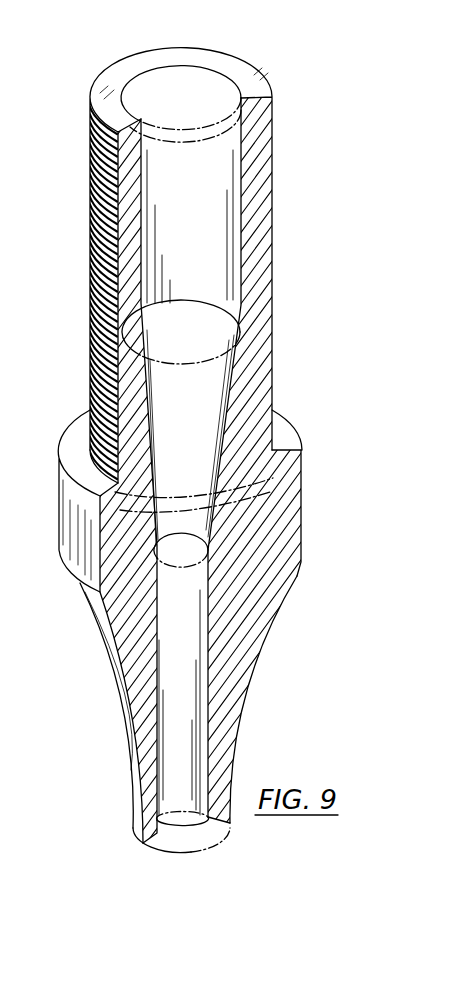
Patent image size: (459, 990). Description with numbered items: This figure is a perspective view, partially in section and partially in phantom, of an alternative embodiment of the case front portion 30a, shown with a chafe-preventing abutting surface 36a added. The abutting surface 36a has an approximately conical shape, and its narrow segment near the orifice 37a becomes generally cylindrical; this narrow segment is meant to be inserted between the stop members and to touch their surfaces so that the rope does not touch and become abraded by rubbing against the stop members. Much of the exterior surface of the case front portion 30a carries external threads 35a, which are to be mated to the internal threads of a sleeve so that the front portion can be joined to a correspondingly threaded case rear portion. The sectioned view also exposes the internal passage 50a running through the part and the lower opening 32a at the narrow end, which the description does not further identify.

The case front portion 30a is at (289, 248).
The central bore 50a is at (167, 80).
The external threads 35a is at (97, 276).
The abutting surface 36a is at (122, 689).
The outlet orifice 32a is at (182, 828).
The orifice 37a is at (203, 836).